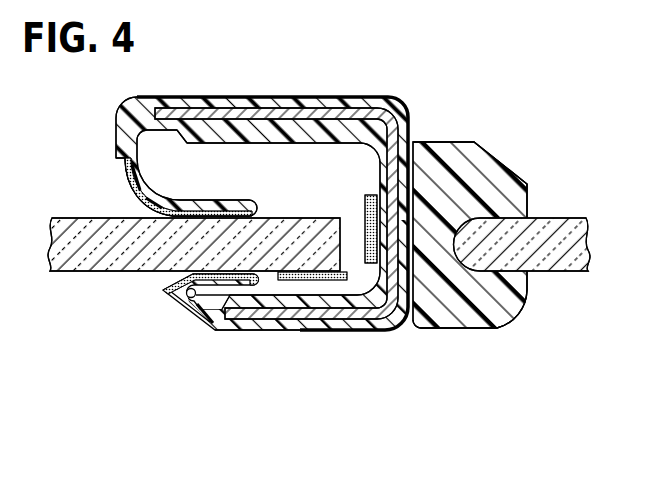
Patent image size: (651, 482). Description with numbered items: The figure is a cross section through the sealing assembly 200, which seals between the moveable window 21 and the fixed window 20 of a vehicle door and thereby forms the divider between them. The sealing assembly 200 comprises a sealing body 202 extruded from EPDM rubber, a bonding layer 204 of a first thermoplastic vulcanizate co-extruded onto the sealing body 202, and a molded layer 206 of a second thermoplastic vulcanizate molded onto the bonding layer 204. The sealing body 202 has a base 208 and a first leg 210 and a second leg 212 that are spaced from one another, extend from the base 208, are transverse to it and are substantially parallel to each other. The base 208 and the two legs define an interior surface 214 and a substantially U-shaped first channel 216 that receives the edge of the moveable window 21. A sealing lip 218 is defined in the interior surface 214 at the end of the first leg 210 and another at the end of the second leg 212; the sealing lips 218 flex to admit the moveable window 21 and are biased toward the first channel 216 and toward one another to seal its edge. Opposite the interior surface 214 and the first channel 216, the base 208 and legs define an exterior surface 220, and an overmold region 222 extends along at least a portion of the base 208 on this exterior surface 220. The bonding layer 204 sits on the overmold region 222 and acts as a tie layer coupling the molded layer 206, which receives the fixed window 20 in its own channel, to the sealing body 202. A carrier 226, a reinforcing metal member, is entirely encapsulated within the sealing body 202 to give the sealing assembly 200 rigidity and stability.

The fixed window 20 is at (558, 267).
The moveable window 21 is at (73, 262).
The sealing assembly 200 is at (321, 386).
The sealing body 202 is at (403, 108).
The bonding layer 204 is at (417, 300).
The molded layer 206 is at (510, 310).
The base 208 is at (400, 193).
The first leg 210 is at (330, 101).
The second leg 212 is at (348, 325).
The interior surface 214 is at (251, 97).
The first channel 216 is at (336, 156).
The sealing lip 218 is at (196, 207).
The exterior surface 220 is at (262, 100).
The overmold region 222 is at (427, 155).
The carrier 226 is at (287, 113).